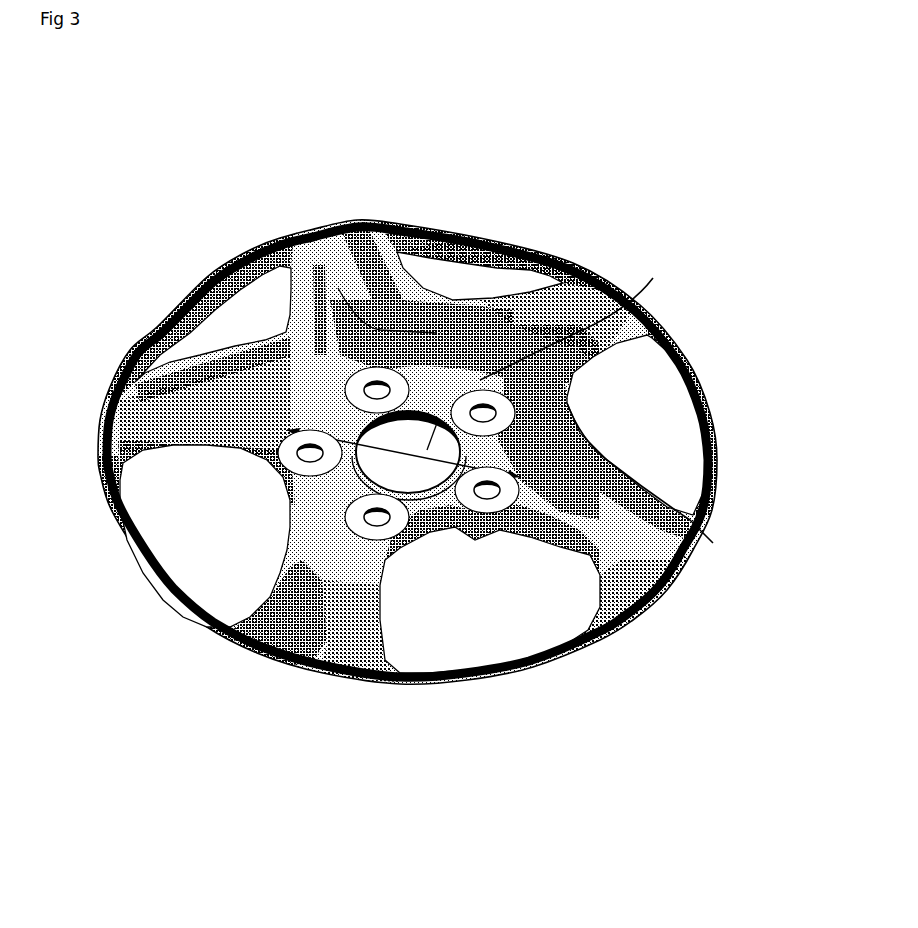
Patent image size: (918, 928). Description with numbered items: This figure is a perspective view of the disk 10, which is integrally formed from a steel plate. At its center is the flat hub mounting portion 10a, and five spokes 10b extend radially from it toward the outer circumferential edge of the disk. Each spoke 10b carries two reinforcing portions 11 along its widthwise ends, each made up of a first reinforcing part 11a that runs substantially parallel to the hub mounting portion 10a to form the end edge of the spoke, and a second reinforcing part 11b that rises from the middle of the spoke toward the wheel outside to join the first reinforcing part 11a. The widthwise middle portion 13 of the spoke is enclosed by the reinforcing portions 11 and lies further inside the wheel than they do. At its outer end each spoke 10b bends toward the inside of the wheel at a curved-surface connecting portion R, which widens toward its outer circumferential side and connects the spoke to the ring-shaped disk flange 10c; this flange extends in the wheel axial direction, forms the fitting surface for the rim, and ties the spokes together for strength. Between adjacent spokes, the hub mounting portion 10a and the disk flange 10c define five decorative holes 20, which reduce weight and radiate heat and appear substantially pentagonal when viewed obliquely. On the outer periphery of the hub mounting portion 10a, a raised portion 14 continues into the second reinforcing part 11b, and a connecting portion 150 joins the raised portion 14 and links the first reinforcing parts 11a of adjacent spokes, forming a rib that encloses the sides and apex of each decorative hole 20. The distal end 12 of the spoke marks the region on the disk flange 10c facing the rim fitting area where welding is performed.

The disk 10 is at (195, 165).
The hub mounting portion 10a is at (622, 312).
The spoke 10b is at (405, 600).
The disk flange 10c is at (497, 660).
The reinforcing portion 11 is at (610, 178).
The first reinforcing part 11a is at (538, 292).
The second reinforcing part 11b is at (587, 317).
The distal end of the spoke 12 is at (655, 478).
The widthwise middle portion of the spoke 13 is at (323, 583).
The raised portion 14 is at (338, 290).
The connecting portion 150 is at (450, 300).
The decorative hole 20 is at (230, 537).
The curved-surface connecting portion R is at (633, 592).